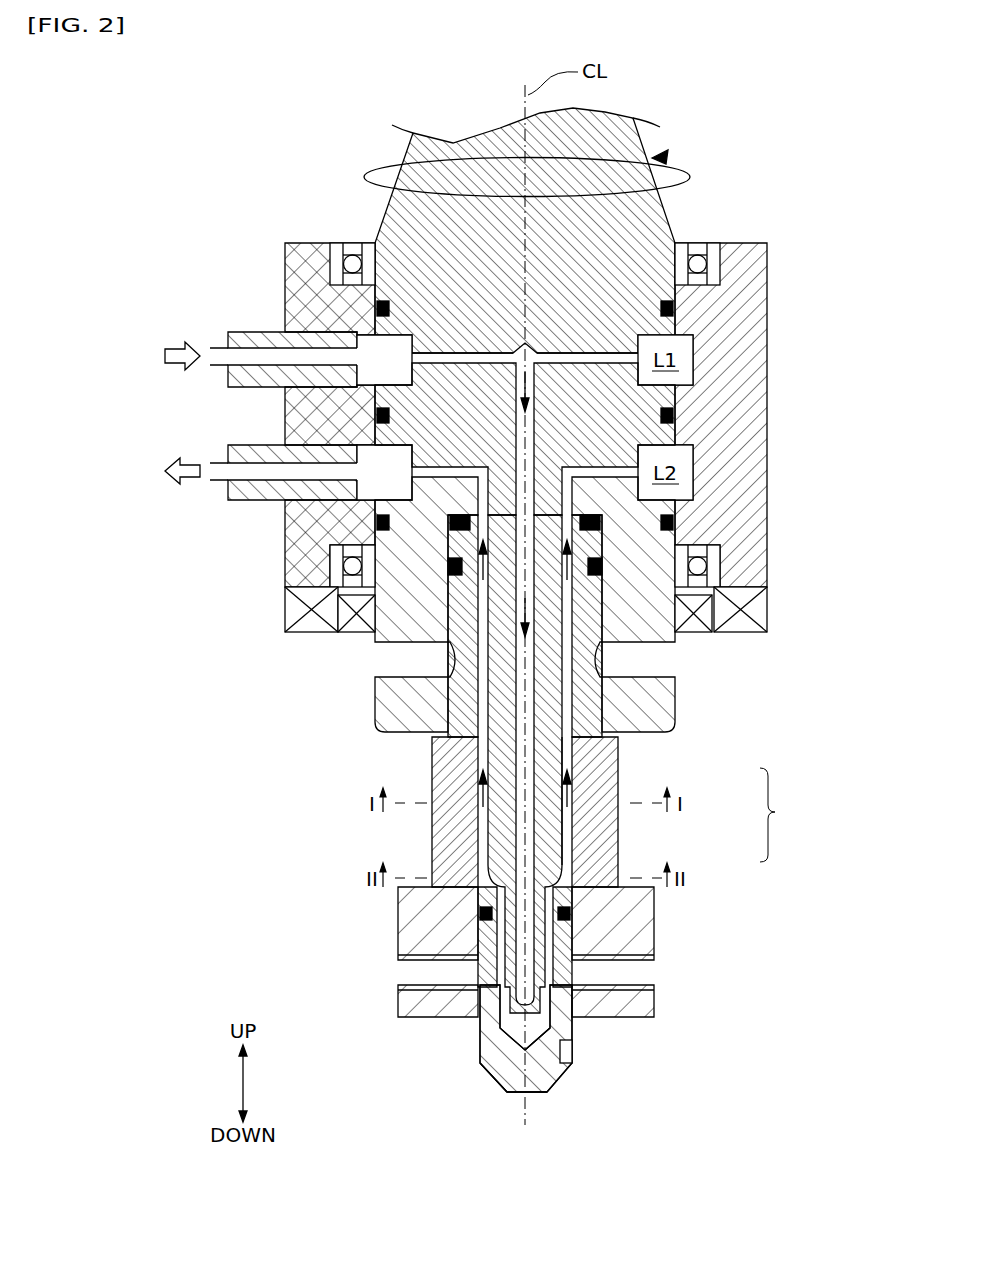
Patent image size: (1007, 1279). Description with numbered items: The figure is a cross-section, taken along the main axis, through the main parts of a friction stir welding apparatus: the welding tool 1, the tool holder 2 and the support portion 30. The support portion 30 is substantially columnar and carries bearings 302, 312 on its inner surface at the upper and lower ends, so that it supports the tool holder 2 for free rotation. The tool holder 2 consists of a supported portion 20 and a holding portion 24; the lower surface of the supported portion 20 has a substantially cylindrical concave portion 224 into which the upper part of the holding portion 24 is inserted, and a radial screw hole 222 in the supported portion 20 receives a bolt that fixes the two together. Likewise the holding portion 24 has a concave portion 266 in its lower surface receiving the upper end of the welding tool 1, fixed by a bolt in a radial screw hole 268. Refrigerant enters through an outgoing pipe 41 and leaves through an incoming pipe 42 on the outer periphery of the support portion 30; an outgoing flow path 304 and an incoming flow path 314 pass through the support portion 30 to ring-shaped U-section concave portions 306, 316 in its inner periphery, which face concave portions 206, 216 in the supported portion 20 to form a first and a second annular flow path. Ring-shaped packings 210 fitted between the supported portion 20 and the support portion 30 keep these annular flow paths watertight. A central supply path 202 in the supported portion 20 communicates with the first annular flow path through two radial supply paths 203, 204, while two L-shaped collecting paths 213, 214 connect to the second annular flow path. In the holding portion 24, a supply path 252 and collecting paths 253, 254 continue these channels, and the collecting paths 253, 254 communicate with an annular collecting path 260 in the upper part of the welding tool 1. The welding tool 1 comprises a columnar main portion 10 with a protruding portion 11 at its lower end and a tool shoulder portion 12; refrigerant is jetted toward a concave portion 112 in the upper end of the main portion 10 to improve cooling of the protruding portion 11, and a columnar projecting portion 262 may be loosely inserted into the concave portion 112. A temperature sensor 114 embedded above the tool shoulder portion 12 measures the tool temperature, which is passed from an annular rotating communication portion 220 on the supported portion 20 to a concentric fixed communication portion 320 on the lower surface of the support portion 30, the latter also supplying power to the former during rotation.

The welding tool 1 is at (455, 1118).
The tool holder 2 is at (775, 815).
The main portion 10 is at (487, 1045).
The protruding portion 11 is at (510, 1094).
The tool shoulder portion 12 is at (490, 1065).
The supported portion 20 is at (672, 735).
The holding portion 24 is at (595, 828).
The support portion 30 is at (306, 243).
The outgoing pipe 41 is at (222, 347).
The incoming pipe 42 is at (212, 483).
The concave portion 112 is at (548, 1025).
The temperature sensor 114 is at (572, 1050).
The supply path 202 is at (540, 394).
The supply path 203 is at (468, 352).
The supply path 204 is at (590, 352).
The concave portion 206 is at (402, 330).
The ring-shaped packing 210 is at (675, 522).
The collecting path 213 is at (450, 466).
The collecting path 214 is at (600, 466).
The concave portion 216 is at (452, 520).
The rotating communication portion 220 is at (358, 633).
The screw hole 222 is at (648, 660).
The concave portion 224 is at (650, 705).
The supply path 252 is at (560, 778).
The collecting path 253 is at (483, 750).
The collecting path 254 is at (567, 762).
The annular collecting path 260 is at (473, 883).
The columnar projecting portion 262 is at (470, 935).
The concave portion 266 is at (610, 935).
The screw hole 268 is at (630, 972).
The bearing 302 is at (352, 250).
The outgoing flow path 304 is at (322, 346).
The concave portion 306 is at (376, 325).
The bearing 312 is at (350, 565).
The incoming flow path 314 is at (365, 490).
The concave portion 316 is at (372, 480).
The fixed communication portion 320 is at (305, 633).